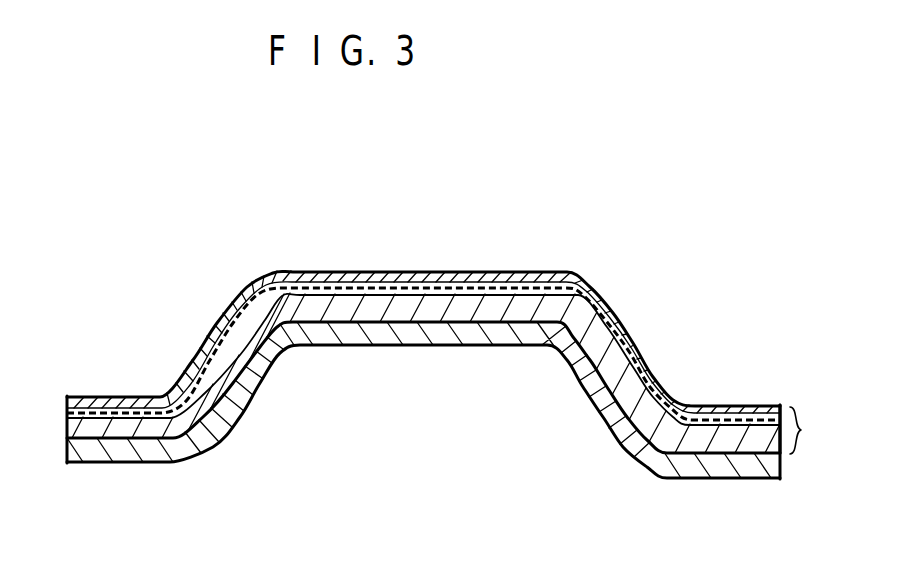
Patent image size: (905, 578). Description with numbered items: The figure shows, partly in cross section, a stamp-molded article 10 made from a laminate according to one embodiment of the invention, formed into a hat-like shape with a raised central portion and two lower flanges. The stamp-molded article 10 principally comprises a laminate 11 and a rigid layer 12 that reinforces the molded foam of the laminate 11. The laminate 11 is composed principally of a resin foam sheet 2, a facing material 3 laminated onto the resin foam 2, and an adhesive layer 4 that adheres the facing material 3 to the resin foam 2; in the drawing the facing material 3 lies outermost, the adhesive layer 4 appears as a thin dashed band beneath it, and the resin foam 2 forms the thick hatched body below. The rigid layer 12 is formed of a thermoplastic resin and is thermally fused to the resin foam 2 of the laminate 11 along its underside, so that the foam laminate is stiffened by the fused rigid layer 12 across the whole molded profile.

The stamp-molded article 10 is at (448, 362).
The resin foam sheet 2 is at (423, 373).
The facing material 3 is at (423, 305).
The adhesive layer 4 is at (423, 309).
The laminate 11 is at (804, 429).
The rigid layer 12 is at (423, 436).